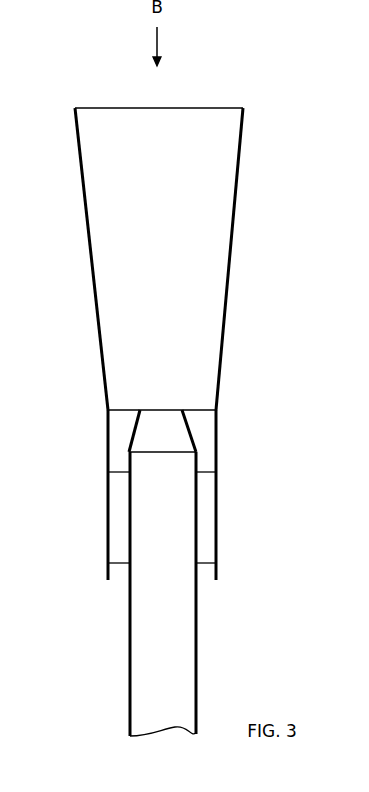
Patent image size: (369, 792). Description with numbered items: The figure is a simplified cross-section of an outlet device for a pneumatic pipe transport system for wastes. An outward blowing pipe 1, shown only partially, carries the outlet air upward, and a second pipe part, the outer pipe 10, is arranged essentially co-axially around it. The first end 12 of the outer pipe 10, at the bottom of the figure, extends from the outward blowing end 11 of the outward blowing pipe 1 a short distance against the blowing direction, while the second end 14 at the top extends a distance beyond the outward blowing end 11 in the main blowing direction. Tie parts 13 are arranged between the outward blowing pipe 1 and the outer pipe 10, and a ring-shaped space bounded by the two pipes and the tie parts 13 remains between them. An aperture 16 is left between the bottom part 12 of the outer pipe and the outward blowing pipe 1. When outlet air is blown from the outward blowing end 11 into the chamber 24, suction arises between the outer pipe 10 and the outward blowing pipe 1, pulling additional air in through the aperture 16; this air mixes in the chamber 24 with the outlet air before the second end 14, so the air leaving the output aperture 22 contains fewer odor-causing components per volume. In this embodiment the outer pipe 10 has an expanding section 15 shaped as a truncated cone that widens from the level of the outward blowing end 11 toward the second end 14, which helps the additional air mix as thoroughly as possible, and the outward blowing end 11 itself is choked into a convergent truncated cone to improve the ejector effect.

The outward blowing pipe 1 is at (198, 668).
The outer pipe 10 is at (218, 457).
The outward blowing end 11 is at (183, 410).
The first end 12 is at (218, 580).
The tie parts 13 is at (207, 507).
The second end 14 is at (244, 108).
The expanding section 15 is at (230, 218).
The aperture 16 is at (119, 571).
The output aperture 22 is at (227, 101).
The chamber 24 is at (153, 210).